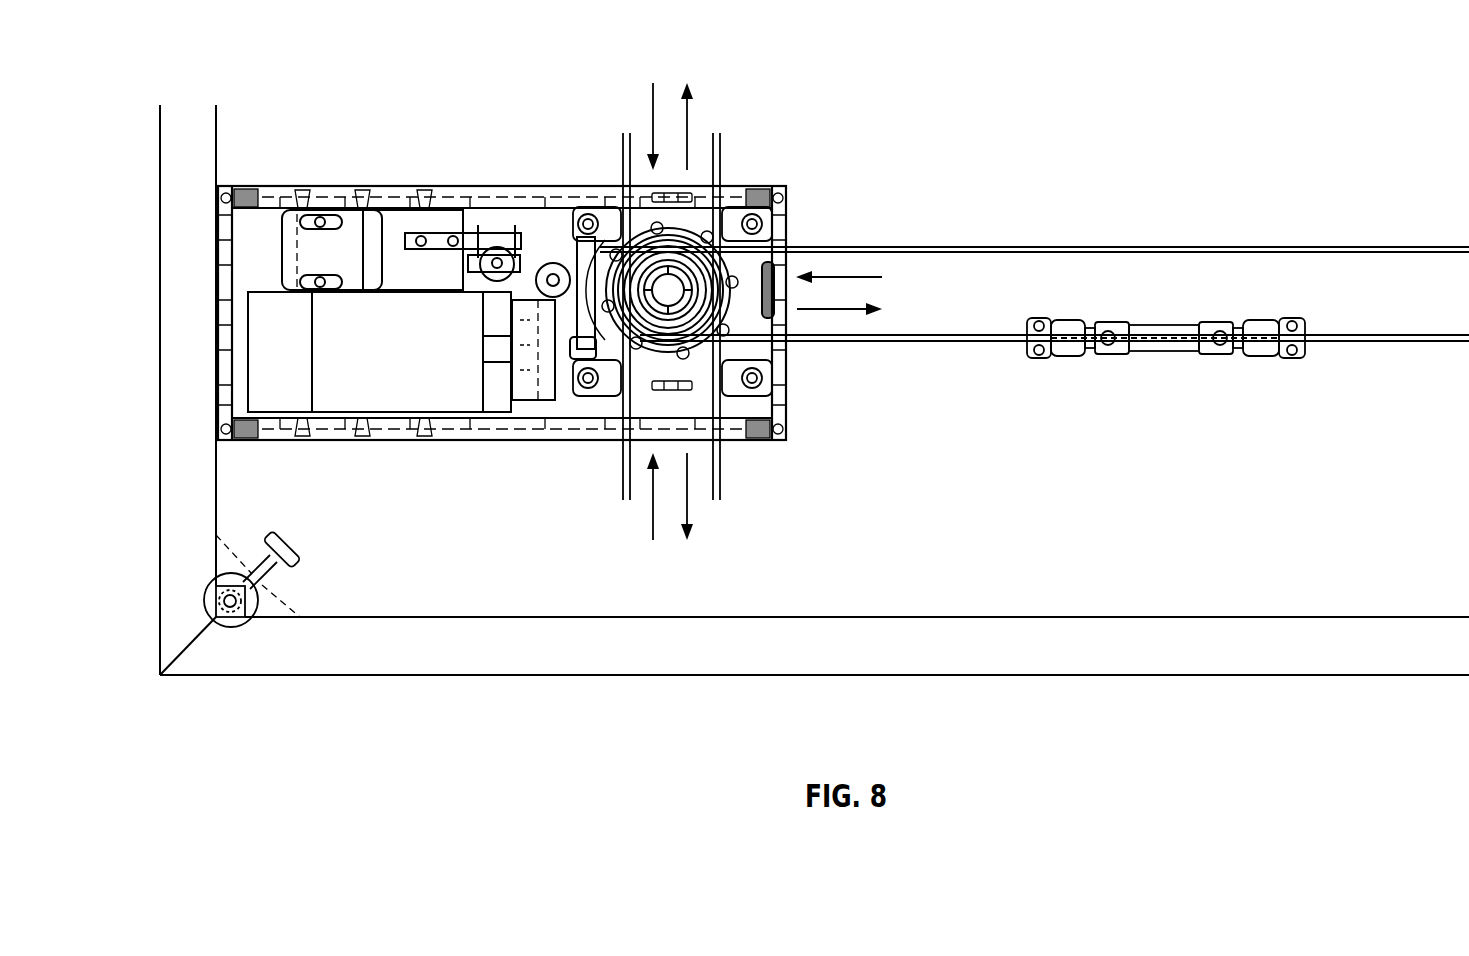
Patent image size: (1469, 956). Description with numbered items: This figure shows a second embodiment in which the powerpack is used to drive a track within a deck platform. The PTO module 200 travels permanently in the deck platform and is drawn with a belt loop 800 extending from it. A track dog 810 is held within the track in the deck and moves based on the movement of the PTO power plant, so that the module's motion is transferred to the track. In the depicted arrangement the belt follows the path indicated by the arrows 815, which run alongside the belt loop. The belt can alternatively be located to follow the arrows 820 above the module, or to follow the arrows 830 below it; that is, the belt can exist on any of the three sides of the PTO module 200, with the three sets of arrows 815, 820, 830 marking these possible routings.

The PTO module 200 is at (390, 165).
The belt loop 800 is at (972, 246).
The track dog 810 is at (1035, 360).
The arrows 815 is at (843, 309).
The arrows 820 is at (688, 118).
The arrows 830 is at (651, 500).